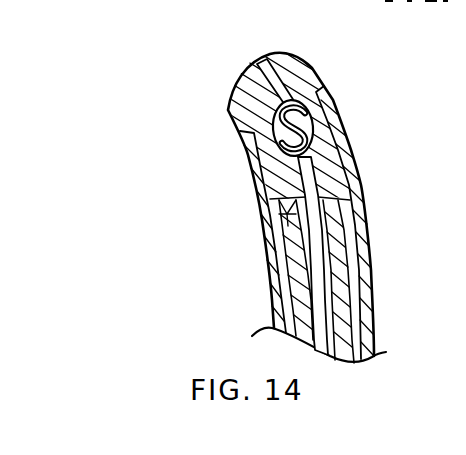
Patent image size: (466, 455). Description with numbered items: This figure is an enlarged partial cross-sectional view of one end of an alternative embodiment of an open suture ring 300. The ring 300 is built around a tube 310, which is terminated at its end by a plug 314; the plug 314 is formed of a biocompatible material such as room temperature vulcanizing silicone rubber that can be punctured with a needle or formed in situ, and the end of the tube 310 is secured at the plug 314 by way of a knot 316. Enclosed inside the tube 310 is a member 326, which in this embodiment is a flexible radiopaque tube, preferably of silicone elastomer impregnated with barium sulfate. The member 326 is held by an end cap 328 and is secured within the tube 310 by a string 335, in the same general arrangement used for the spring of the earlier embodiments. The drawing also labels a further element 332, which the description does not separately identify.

The ring 300 is at (250, 184).
The tube 310 is at (258, 152).
The plug 314 is at (247, 85).
The knot 316 is at (293, 101).
The member 326 is at (302, 295).
The end cap 328 is at (296, 212).
The outer layer 332 is at (332, 107).
The string 335 is at (324, 276).